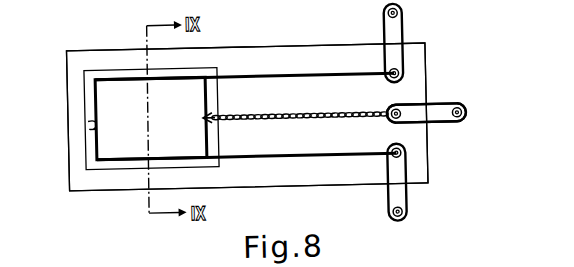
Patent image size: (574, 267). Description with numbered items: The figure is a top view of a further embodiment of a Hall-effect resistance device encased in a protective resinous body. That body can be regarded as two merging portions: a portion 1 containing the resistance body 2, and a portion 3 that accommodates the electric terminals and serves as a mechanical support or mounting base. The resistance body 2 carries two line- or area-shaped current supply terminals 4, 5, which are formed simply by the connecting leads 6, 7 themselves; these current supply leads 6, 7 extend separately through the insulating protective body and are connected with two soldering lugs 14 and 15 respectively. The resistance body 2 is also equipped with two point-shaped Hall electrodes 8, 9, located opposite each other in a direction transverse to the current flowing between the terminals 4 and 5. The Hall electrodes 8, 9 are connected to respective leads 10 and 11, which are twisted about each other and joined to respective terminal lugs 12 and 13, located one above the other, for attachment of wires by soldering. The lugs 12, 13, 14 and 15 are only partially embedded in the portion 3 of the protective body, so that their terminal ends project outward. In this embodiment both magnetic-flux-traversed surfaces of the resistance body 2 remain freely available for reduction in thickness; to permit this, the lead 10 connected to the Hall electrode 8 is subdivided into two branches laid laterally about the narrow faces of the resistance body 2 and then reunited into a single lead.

The portion of protective body containing the resistance body 1 is at (105, 57).
The resistance body 2 is at (107, 95).
The portion of protective body accommodating the terminals 3 is at (247, 117).
The current supply terminal 4 is at (138, 75).
The current supply terminal 5 is at (189, 157).
The connecting lead 6 is at (301, 76).
The connecting lead 7 is at (281, 158).
The Hall electrode 8 is at (88, 122).
The Hall electrode 9 is at (208, 115).
The connecting lead 10 is at (86, 74).
The connecting lead 11 is at (261, 120).
The terminal lug 12 is at (426, 113).
The terminal lug 13 is at (462, 118).
The soldering lug 14 is at (400, 215).
The soldering lug 15 is at (400, 17).